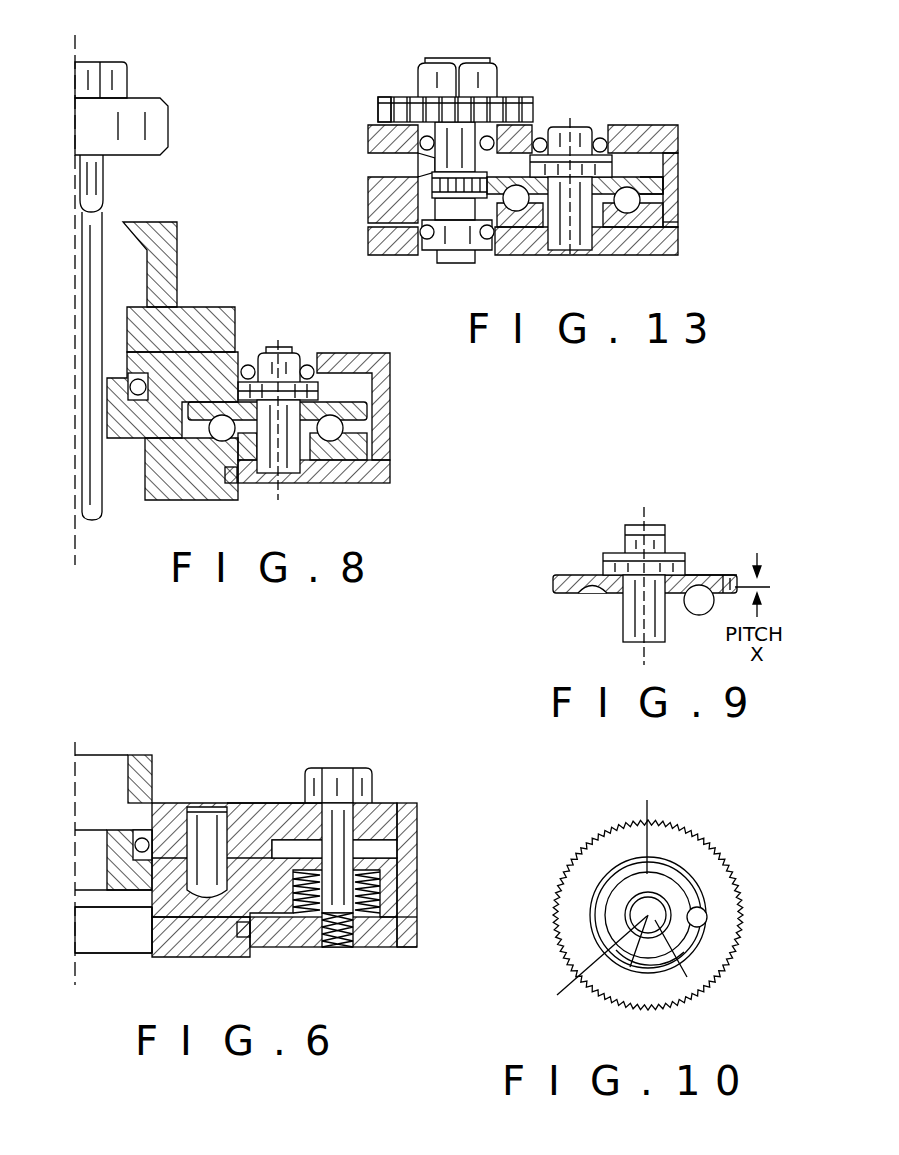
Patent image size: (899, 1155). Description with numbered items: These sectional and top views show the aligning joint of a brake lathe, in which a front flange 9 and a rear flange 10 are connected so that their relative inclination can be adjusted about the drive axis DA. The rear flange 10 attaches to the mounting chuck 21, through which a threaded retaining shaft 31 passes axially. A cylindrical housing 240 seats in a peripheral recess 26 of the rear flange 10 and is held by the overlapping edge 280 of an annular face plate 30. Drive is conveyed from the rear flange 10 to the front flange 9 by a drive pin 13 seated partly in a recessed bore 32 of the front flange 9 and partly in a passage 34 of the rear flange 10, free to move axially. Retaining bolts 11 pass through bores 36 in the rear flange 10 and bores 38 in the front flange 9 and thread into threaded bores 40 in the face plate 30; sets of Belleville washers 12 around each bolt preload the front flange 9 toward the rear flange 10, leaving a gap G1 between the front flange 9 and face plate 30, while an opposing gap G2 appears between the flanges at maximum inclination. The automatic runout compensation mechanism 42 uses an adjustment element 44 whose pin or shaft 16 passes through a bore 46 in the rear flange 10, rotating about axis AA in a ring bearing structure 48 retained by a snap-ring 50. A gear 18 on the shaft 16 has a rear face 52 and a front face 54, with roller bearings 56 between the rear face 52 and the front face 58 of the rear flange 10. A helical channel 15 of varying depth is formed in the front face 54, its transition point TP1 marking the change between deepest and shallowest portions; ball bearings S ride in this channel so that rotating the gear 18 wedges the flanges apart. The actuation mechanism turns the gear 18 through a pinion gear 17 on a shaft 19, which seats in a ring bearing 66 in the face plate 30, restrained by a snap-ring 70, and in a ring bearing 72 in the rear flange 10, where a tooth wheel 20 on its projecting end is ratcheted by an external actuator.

In FIG. 8, the front flange 9 is at (187, 490).
In FIG. 13, the front flange 9 is at (395, 210).
In FIG. 6, the front flange 9 is at (213, 937).
In FIG. 8, the rear flange 10 is at (183, 283).
In FIG. 13, the rear flange 10 is at (665, 126).
In FIG. 6, the rear flange 10 is at (233, 823).
In FIG. 6, the retaining screws or bolts 11 is at (336, 818).
In FIG. 6, the Belleville washers 12 is at (420, 879).
In FIG. 6, the drive pin 13 is at (209, 830).
In FIG. 9, the helical channel 15 is at (576, 594).
In FIG. 10, the helical channel 15 is at (685, 882).
In FIG. 13, the pin or shaft 16 is at (566, 222).
In FIG. 9, the pin or shaft 16 is at (654, 642).
In FIG. 10, the pin or shaft 16 is at (654, 921).
In FIG. 13, the pinion gear 17 is at (418, 150).
In FIG. 13, the gear 18 is at (662, 183).
In FIG. 9, the gear 18 is at (553, 583).
In FIG. 10, the gear 18 is at (742, 928).
In FIG. 13, the shaft 19 is at (433, 193).
In FIG. 13, the tooth wheel or gear 20 is at (402, 97).
In FIG. 8, the mounting chuck 21 is at (157, 226).
In FIG. 6, the peripheral recess 26 is at (404, 810).
In FIG. 8, the annular face plate 30 is at (352, 483).
In FIG. 13, the annular face plate 30 is at (640, 250).
In FIG. 6, the annular face plate 30 is at (362, 947).
In FIG. 8, the threaded retaining shaft 31 is at (82, 180).
In FIG. 6, the recessed bore 32 is at (165, 954).
In FIG. 6, the passage 34 is at (160, 803).
In FIG. 6, the bores 36 is at (286, 803).
In FIG. 6, the bores 38 is at (288, 896).
In FIG. 6, the threaded bores 40 is at (303, 945).
In FIG. 13, the automatic runout compensation mechanism 42 is at (492, 56).
In FIG. 8, the adjustment element 44 is at (300, 345).
In FIG. 13, the adjustment element 44 is at (585, 98).
In FIG. 9, the adjustment element 44 is at (661, 510).
In FIG. 8, the bore 46 is at (230, 318).
In FIG. 8, the ring bearing structure 48 is at (382, 352).
In FIG. 8, the snap-ring 50 is at (302, 352).
In FIG. 8, the rear face 52 is at (367, 396).
In FIG. 9, the rear face 52 is at (724, 575).
In FIG. 9, the front face 54 is at (618, 594).
In FIG. 10, the front face 54 is at (577, 928).
In FIG. 13, the roller bearings 56 is at (512, 166).
In FIG. 13, the front face 58 is at (650, 126).
In FIG. 13, the ring bearing 66 is at (403, 256).
In FIG. 13, the snap-ring 70 is at (482, 258).
In FIG. 13, the ring bearing 72 is at (378, 108).
In FIG. 6, the cylindrical housing 240 is at (418, 843).
In FIG. 6, the overlapping edge 280 is at (398, 950).
In FIG. 13, the pitch plate P is at (654, 176).
In FIG. 9, the pitch plate P is at (687, 523).
In FIG. 10, the pitch plate P is at (708, 822).
In FIG. 13, the ball bearings S is at (517, 210).
In FIG. 9, the ball bearings S is at (700, 616).
In FIG. 10, the ball bearings S is at (707, 912).
In FIG. 13, the gap G1 is at (663, 230).
In FIG. 6, the gap G1 is at (418, 920).
In FIG. 8, the gap G2 is at (128, 401).
In FIG. 8, the drive axis DA is at (82, 300).
In FIG. 6, the drive axis DA is at (78, 865).
In FIG. 8, the axis AA is at (278, 408).
In FIG. 13, the axis AA is at (571, 177).
In FIG. 9, the axis AA is at (646, 583).
In FIG. 10, the axis AA is at (589, 964).
In FIG. 10, the transition point TP1 is at (647, 800).